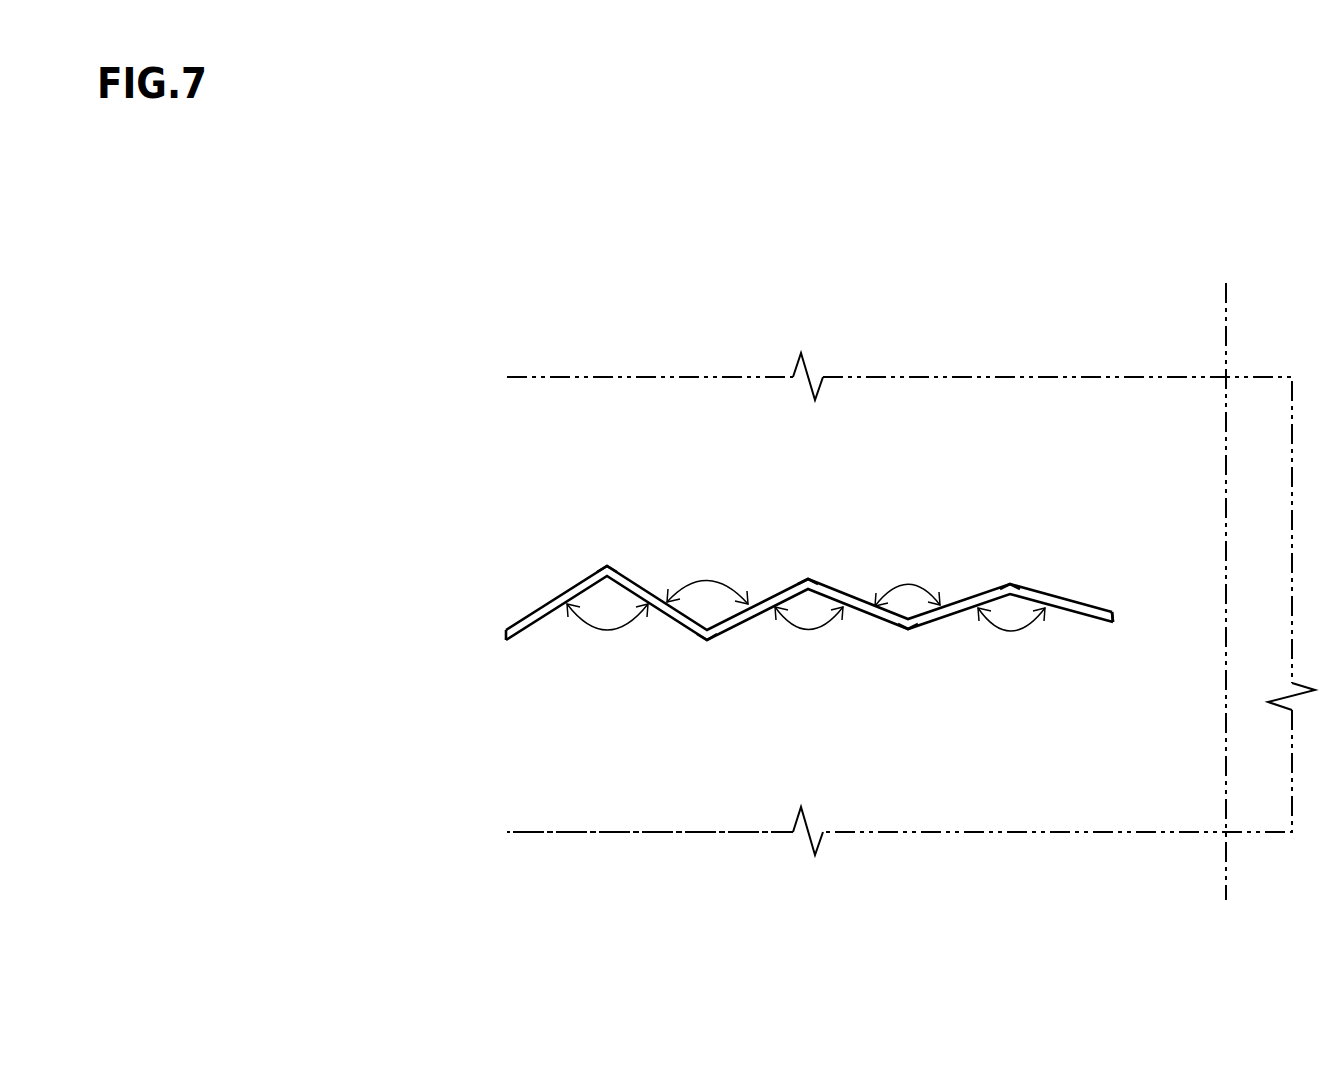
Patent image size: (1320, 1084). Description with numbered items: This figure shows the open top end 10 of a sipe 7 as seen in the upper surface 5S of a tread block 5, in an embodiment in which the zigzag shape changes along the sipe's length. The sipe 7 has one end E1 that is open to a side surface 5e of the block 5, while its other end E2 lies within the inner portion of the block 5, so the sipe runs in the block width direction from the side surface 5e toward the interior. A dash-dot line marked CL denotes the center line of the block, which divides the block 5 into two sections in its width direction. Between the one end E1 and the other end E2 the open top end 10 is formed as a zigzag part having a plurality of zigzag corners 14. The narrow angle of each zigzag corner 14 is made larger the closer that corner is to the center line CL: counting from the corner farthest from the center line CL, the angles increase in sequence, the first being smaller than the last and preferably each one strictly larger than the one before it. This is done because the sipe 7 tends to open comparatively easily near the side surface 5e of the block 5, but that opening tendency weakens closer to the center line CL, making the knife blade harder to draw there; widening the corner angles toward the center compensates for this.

The block 5 is at (603, 835).
The side surface 5e is at (500, 735).
The upper surface 5S is at (1132, 417).
The sipe 7 is at (530, 613).
The open top end 10 is at (560, 582).
The zigzag corner 14 is at (606, 563).
The one end E1 is at (507, 637).
The other end E2 is at (1113, 622).
The center line CL is at (1222, 608).